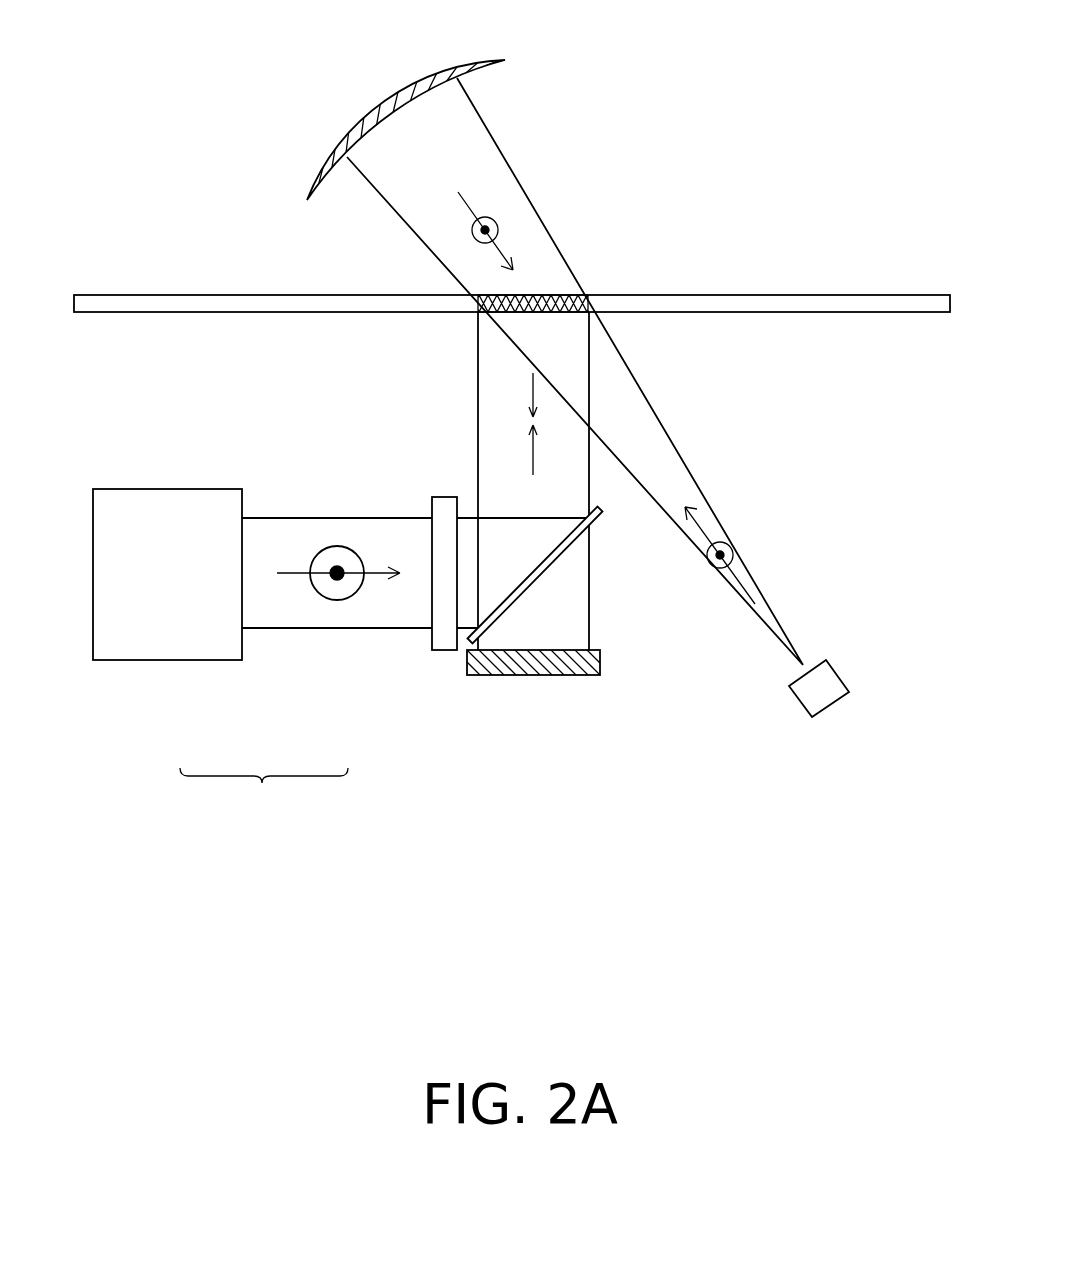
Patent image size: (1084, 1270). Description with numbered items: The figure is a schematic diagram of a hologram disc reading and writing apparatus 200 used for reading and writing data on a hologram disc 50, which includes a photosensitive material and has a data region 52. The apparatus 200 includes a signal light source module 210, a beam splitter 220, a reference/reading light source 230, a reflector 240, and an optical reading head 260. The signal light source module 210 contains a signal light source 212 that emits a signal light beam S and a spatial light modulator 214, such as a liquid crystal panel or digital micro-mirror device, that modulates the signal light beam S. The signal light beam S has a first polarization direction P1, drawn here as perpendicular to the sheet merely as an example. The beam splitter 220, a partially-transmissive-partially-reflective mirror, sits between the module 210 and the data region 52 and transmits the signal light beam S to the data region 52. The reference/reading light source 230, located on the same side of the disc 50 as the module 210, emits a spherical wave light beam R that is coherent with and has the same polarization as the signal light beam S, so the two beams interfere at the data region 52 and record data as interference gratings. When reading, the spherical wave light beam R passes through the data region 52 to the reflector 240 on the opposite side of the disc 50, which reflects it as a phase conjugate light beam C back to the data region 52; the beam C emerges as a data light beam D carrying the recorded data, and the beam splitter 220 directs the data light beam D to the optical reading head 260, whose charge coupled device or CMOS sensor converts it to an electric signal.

The hologram disc reading and writing apparatus 200 is at (935, 835).
The signal light source module 210 is at (264, 799).
The signal light source 212 is at (195, 640).
The spatial light modulator 214 is at (445, 632).
The beam splitter 220 is at (552, 560).
The reference/reading light source 230 is at (822, 690).
The reflector 240 is at (478, 62).
The optical reading head 260 is at (525, 662).
The hologram disc 50 is at (862, 304).
The data region 52 is at (550, 297).
The first polarization direction P1 is at (473, 233).
The phase conjugate light beam C is at (468, 208).
The data light beam D is at (533, 405).
The signal light beam S is at (533, 430).
The spherical wave light beam R is at (748, 585).